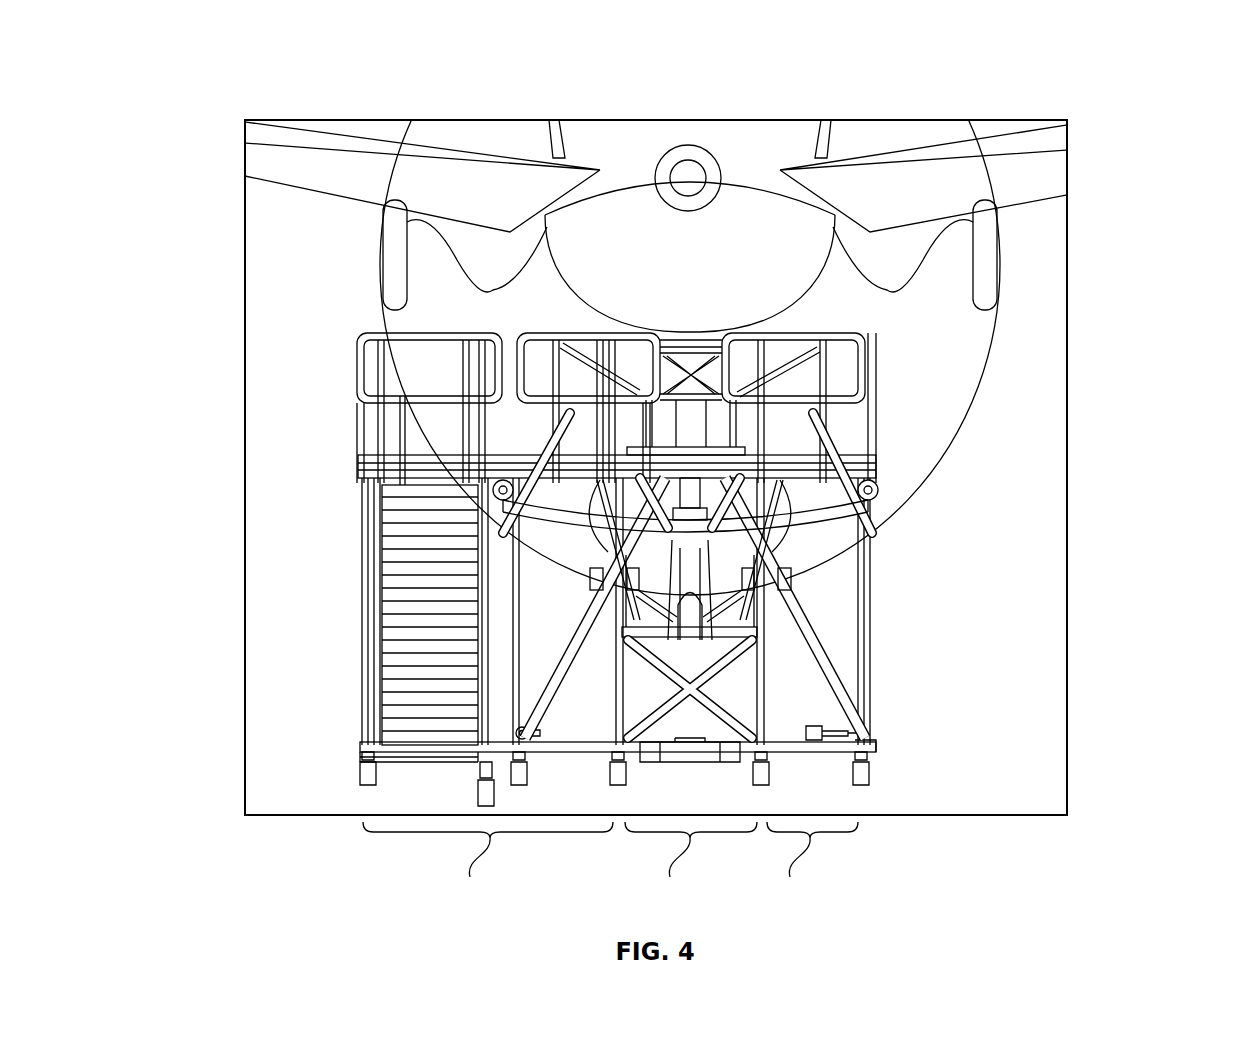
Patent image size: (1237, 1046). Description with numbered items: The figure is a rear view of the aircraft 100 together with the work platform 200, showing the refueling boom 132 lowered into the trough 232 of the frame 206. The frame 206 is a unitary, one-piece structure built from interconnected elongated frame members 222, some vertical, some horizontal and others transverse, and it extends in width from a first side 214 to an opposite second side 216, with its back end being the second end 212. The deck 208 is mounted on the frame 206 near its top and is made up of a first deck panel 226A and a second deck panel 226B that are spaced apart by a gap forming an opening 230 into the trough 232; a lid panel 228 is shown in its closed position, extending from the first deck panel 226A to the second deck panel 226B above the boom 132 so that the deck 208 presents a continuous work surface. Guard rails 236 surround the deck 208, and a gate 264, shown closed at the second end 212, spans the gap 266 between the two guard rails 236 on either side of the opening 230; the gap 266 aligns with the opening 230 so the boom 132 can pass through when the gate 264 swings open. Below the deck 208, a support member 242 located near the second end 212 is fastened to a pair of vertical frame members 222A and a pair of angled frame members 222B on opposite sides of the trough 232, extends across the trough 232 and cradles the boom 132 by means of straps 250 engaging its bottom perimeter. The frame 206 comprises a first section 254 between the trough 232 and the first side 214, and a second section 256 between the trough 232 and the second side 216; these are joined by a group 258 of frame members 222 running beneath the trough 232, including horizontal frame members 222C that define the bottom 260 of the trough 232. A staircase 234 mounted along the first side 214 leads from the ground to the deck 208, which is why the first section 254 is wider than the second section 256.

The aircraft 100 is at (1035, 238).
The work platform 200 is at (322, 383).
The deck 208 is at (356, 462).
The guard rails 236 is at (617, 333).
The first deck panel 226A is at (810, 460).
The second deck panel 226B is at (588, 462).
The gate 264 is at (683, 353).
The gap 266 is at (717, 327).
The lid panel 228 is at (712, 450).
The first side 214 is at (352, 678).
The staircase 234 is at (385, 582).
The second end 212 is at (369, 735).
The second side 216 is at (875, 572).
The frame 206 is at (863, 740).
The vertical frame members 222A is at (620, 570).
The angled frame members 222B is at (572, 636).
The horizontal frame members 222C is at (720, 637).
The frame members 222 is at (730, 658).
The opening 230 is at (703, 472).
The trough 232 is at (725, 565).
The straps 250 is at (730, 603).
The support member 242 is at (640, 623).
The bottom 260 is at (765, 630).
The refueling boom 132 is at (687, 607).
The first section 254 is at (488, 865).
The group 258 is at (691, 865).
The second section 256 is at (812, 865).